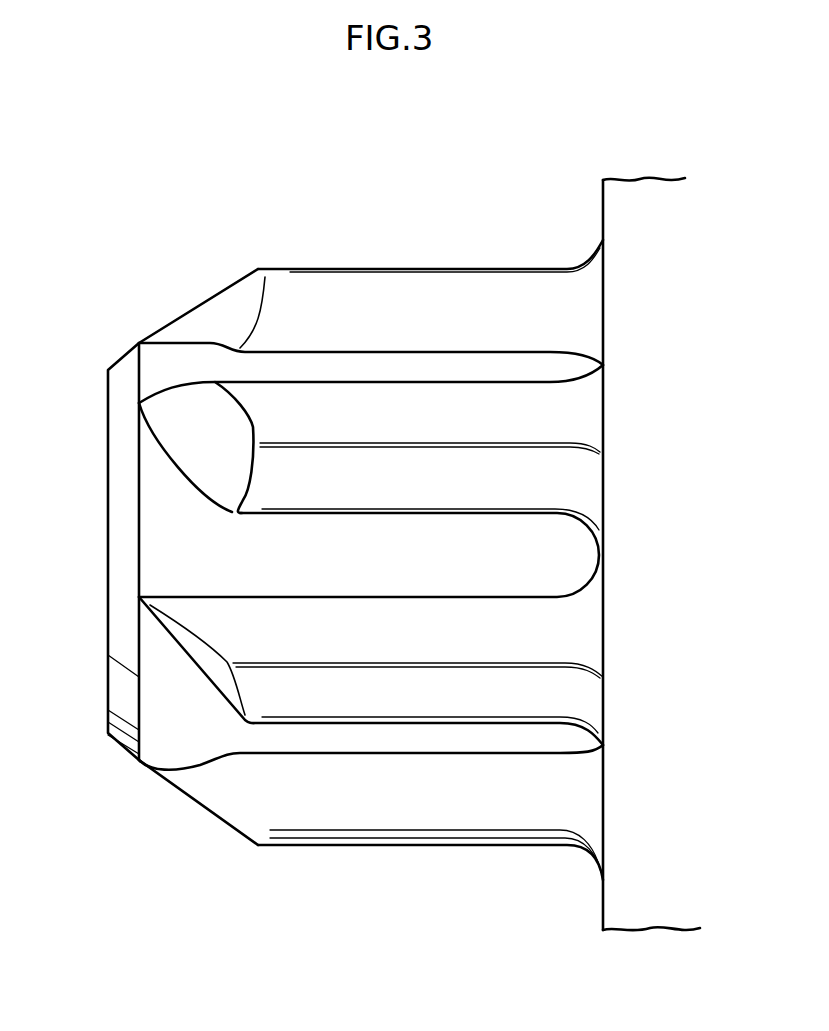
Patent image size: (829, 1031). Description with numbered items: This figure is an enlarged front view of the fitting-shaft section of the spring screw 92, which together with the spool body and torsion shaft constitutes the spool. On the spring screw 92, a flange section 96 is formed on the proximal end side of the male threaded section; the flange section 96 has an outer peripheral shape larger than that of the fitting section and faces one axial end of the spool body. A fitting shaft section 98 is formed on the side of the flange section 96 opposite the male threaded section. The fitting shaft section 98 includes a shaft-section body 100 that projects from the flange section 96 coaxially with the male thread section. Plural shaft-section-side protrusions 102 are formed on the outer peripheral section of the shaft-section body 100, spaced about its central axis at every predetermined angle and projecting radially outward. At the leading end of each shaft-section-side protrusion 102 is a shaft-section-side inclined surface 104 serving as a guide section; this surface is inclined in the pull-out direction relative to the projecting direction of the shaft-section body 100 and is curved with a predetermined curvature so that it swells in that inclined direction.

The spring screw 92 is at (195, 207).
The flange section 96 is at (603, 217).
The fitting shaft section 98 is at (364, 260).
The shaft-section body 100 is at (222, 558).
The shaft-section-side protrusions 102 is at (477, 288).
The shaft-section-side inclined surface 104 is at (198, 325).